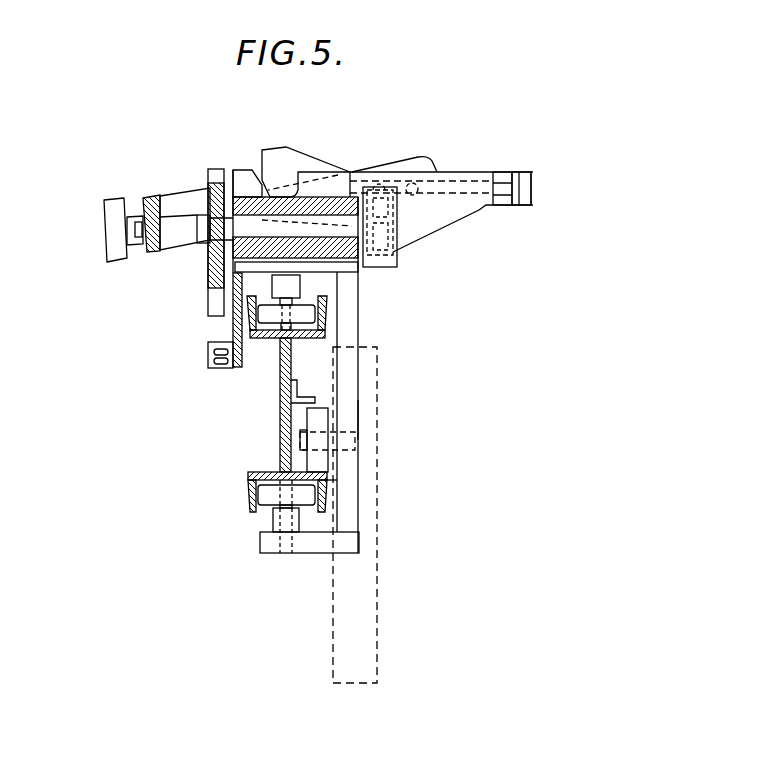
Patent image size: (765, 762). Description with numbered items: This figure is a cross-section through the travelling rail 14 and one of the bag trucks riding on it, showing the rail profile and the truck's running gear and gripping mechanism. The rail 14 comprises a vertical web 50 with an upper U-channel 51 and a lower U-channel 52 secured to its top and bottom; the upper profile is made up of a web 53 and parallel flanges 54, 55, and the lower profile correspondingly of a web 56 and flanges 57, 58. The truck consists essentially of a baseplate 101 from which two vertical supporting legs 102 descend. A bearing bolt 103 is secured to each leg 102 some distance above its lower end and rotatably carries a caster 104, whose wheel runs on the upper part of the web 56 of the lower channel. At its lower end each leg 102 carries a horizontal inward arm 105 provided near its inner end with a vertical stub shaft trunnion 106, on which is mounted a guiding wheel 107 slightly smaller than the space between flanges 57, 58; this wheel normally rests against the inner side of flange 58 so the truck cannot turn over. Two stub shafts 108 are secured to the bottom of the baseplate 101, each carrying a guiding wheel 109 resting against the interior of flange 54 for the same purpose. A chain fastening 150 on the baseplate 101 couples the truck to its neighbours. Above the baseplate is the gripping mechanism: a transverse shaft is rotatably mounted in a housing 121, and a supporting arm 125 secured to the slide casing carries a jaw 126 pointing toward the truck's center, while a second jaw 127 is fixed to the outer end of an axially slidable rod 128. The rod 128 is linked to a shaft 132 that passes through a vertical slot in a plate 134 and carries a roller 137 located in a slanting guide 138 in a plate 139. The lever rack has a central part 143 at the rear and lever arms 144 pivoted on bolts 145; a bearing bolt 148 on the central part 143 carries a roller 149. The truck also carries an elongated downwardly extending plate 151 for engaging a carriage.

The rail 14 is at (279, 393).
The vertical web 50 is at (293, 370).
The upper U-channel 51 is at (262, 343).
The lower U-channel 52 is at (327, 498).
The web 53 is at (315, 345).
The flange 54 is at (327, 322).
The flange 55 is at (258, 324).
The web 56 is at (255, 472).
The flange 57 is at (340, 507).
The flange 58 is at (253, 490).
The baseplate 101 is at (264, 274).
The supporting leg 102 is at (361, 420).
The bearing bolt 103 is at (345, 440).
The caster 104 is at (322, 455).
The horizontal inward arm 105 is at (313, 555).
The stub shaft trunnion 106 is at (273, 523).
The guiding wheel 107 is at (267, 498).
The stub shaft 108 is at (300, 282).
The guiding wheel 109 is at (316, 308).
The housing 121 is at (362, 197).
The supporting arm 125 is at (421, 238).
The jaw 126 is at (533, 177).
The second jaw 127 is at (515, 170).
The rod 128 is at (497, 177).
The shaft 132 is at (170, 208).
The plate 134 is at (213, 187).
The roller 137 is at (338, 175).
The slanting guide 138 is at (254, 175).
The plate 139 is at (238, 170).
The central part of lever rack 143 is at (150, 200).
The lever arm 144 is at (418, 158).
The bolt 145 is at (413, 197).
The bearing bolt 148 is at (143, 247).
The roller 149 is at (110, 243).
The chain fastening 150 is at (208, 353).
The plate 151 is at (375, 610).